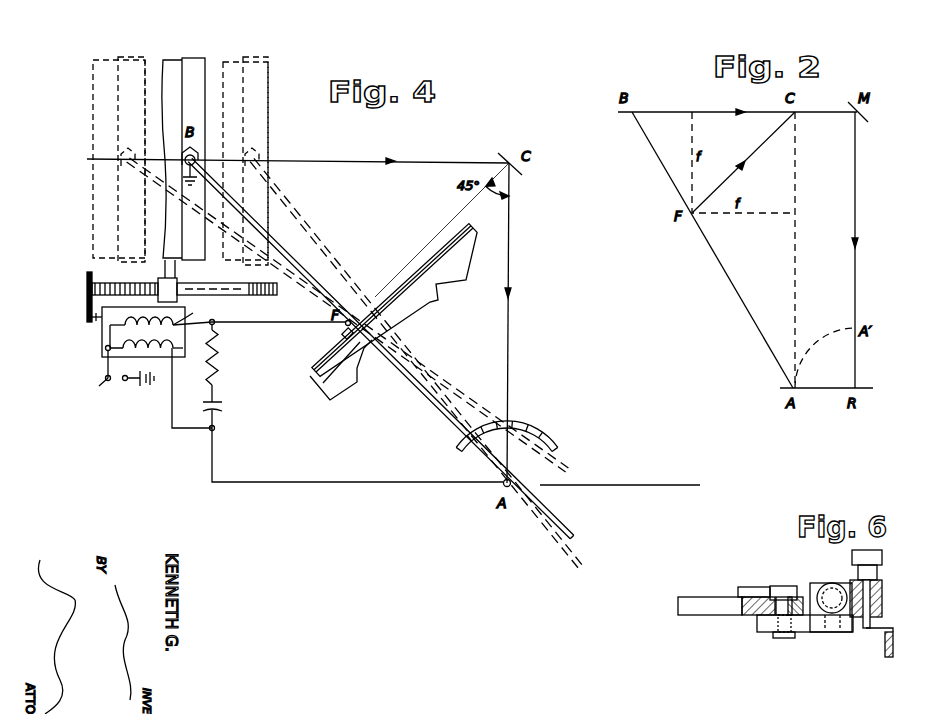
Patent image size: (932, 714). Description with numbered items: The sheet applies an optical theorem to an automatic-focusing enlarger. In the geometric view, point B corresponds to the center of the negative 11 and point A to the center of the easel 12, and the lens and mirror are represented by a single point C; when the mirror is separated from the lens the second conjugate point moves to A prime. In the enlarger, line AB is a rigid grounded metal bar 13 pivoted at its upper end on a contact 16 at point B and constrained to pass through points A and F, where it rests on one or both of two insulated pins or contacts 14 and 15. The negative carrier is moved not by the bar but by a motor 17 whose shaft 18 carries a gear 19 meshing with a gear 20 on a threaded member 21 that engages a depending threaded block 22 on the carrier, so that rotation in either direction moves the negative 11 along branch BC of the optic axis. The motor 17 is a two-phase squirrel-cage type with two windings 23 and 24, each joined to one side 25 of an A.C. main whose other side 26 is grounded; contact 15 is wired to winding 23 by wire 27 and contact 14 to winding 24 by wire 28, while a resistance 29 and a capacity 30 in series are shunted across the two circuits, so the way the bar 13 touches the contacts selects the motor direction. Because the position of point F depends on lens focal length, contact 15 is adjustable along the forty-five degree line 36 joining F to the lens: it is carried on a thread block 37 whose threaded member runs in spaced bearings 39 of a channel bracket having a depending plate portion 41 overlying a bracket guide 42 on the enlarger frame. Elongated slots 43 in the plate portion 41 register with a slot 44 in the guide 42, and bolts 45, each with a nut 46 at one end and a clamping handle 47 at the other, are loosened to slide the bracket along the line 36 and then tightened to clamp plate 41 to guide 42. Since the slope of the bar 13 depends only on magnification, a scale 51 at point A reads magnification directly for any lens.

In FIG. 4, the negative 11 is at (183, 159).
In FIG. 4, the easel 12 is at (612, 486).
In FIG. 4, the rigid bar 13 is at (430, 414).
In FIG. 4, the contact 14 is at (503, 480).
In FIG. 4, the contact 15 is at (345, 325).
In FIG. 4, the contact 16 is at (195, 152).
In FIG. 4, the motor 17 is at (102, 352).
In FIG. 4, the shaft 18 is at (96, 321).
In FIG. 4, the gear 19 is at (87, 317).
In FIG. 4, the gear 20 is at (87, 278).
In FIG. 4, the threaded member 21 is at (133, 283).
In FIG. 4, the threaded block 22 is at (177, 282).
In FIG. 4, the winding 23 is at (161, 314).
In FIG. 4, the winding 24 is at (159, 376).
In FIG. 4, the side of A.C. main 25 is at (97, 375).
In FIG. 4, the side of A.C. main 26 is at (126, 381).
In FIG. 4, the wire 27 is at (263, 324).
In FIG. 6, the wire 27 is at (893, 648).
In FIG. 4, the wire 28 is at (357, 455).
In FIG. 4, the resistance 29 is at (220, 352).
In FIG. 4, the capacity 30 is at (222, 403).
In FIG. 4, the 45° line 36 is at (452, 214).
In FIG. 2, the 45° line 36 is at (764, 152).
In FIG. 4, the thread block 37 is at (348, 340).
In FIG. 6, the bearings 39 is at (883, 588).
In FIG. 6, the plate portion 41 is at (844, 632).
In FIG. 4, the bracket guide 42 is at (459, 276).
In FIG. 6, the bracket guide 42 is at (688, 617).
In FIG. 6, the elongated slots 43 is at (760, 628).
In FIG. 4, the slot 44 is at (470, 236).
In FIG. 6, the slot 44 is at (750, 618).
In FIG. 6, the bolts 45 is at (779, 640).
In FIG. 6, the nut 46 is at (793, 636).
In FIG. 6, the handle 47 is at (762, 588).
In FIG. 4, the scale 51 is at (563, 447).